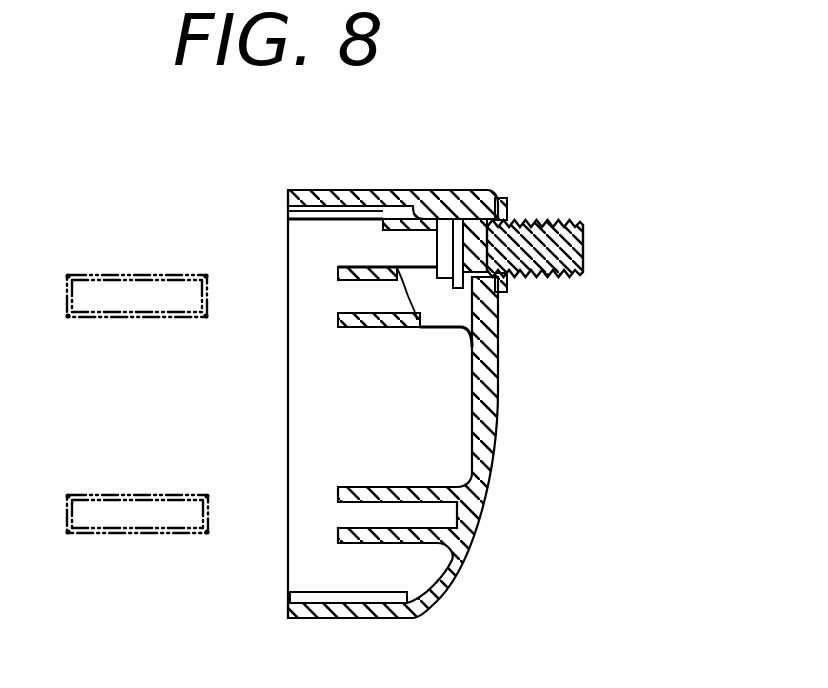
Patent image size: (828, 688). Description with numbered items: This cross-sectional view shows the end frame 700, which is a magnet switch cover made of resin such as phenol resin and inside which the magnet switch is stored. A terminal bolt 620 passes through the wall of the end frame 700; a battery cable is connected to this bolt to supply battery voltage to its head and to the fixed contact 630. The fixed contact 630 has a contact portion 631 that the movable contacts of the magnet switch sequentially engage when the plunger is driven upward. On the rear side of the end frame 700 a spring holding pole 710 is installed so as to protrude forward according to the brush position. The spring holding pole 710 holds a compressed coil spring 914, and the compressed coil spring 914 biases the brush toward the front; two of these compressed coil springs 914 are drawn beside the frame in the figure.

The terminal bolt 620 is at (580, 251).
The fixed contact 630 is at (393, 222).
The contact portion 631 is at (390, 225).
The end frame 700 is at (487, 392).
The spring holding pole 710 is at (407, 487).
The compressed coil spring 914 is at (203, 317).